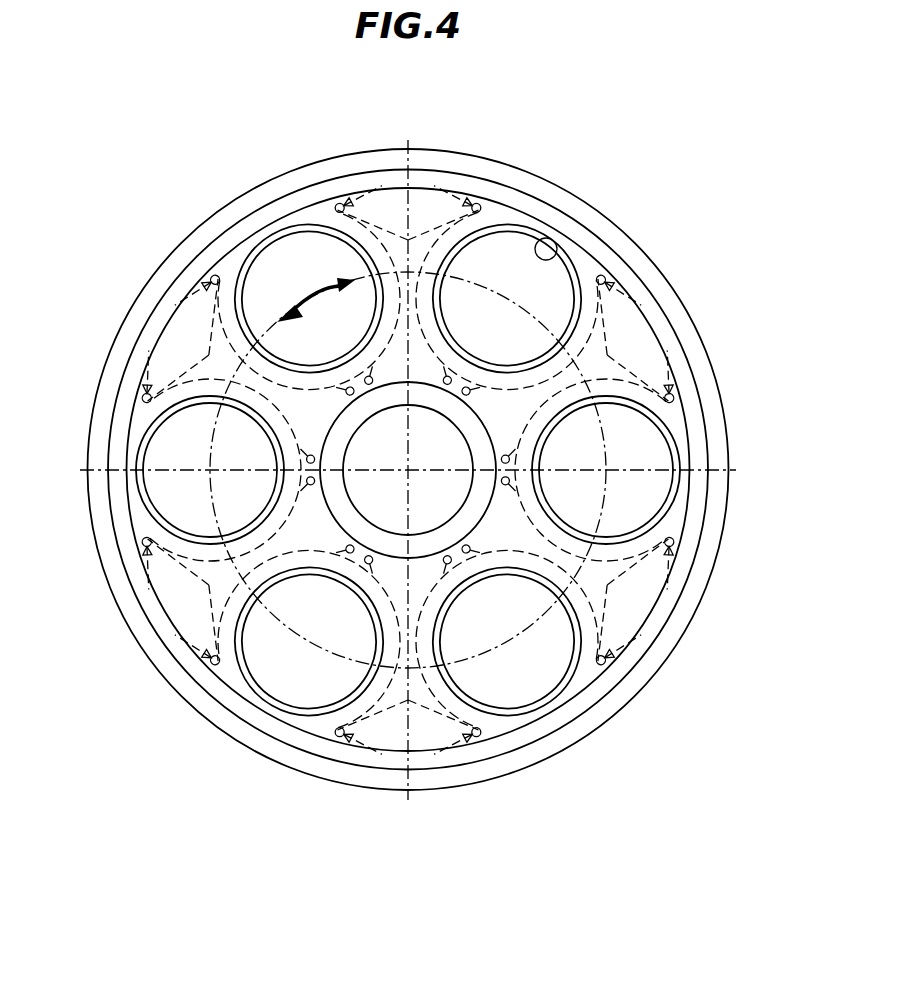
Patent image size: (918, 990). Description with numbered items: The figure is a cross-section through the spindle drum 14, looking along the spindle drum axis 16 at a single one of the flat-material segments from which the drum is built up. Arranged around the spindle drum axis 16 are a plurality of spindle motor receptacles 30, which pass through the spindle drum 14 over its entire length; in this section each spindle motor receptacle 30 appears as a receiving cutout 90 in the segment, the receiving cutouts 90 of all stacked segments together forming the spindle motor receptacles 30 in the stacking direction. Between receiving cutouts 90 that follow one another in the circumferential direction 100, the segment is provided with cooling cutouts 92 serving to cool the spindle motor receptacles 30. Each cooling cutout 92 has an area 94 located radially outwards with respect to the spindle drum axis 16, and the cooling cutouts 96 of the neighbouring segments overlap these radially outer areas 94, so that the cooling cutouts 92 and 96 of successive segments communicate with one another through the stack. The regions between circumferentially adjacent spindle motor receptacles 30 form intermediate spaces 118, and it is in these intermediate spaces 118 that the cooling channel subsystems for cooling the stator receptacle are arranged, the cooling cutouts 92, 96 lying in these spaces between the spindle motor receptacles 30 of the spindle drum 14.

The spindle drum 14 is at (688, 263).
The spindle drum axis 16 is at (412, 466).
The spindle motor receptacle 30 is at (301, 261).
The receiving cutout 90 is at (556, 258).
The cooling cutout 92 is at (450, 255).
The area of the cooling cutout located radially outwards 94 is at (338, 203).
The cooling cutout 96 is at (334, 209).
The circumferential direction 100 is at (316, 297).
The intermediate space 118 is at (413, 243).